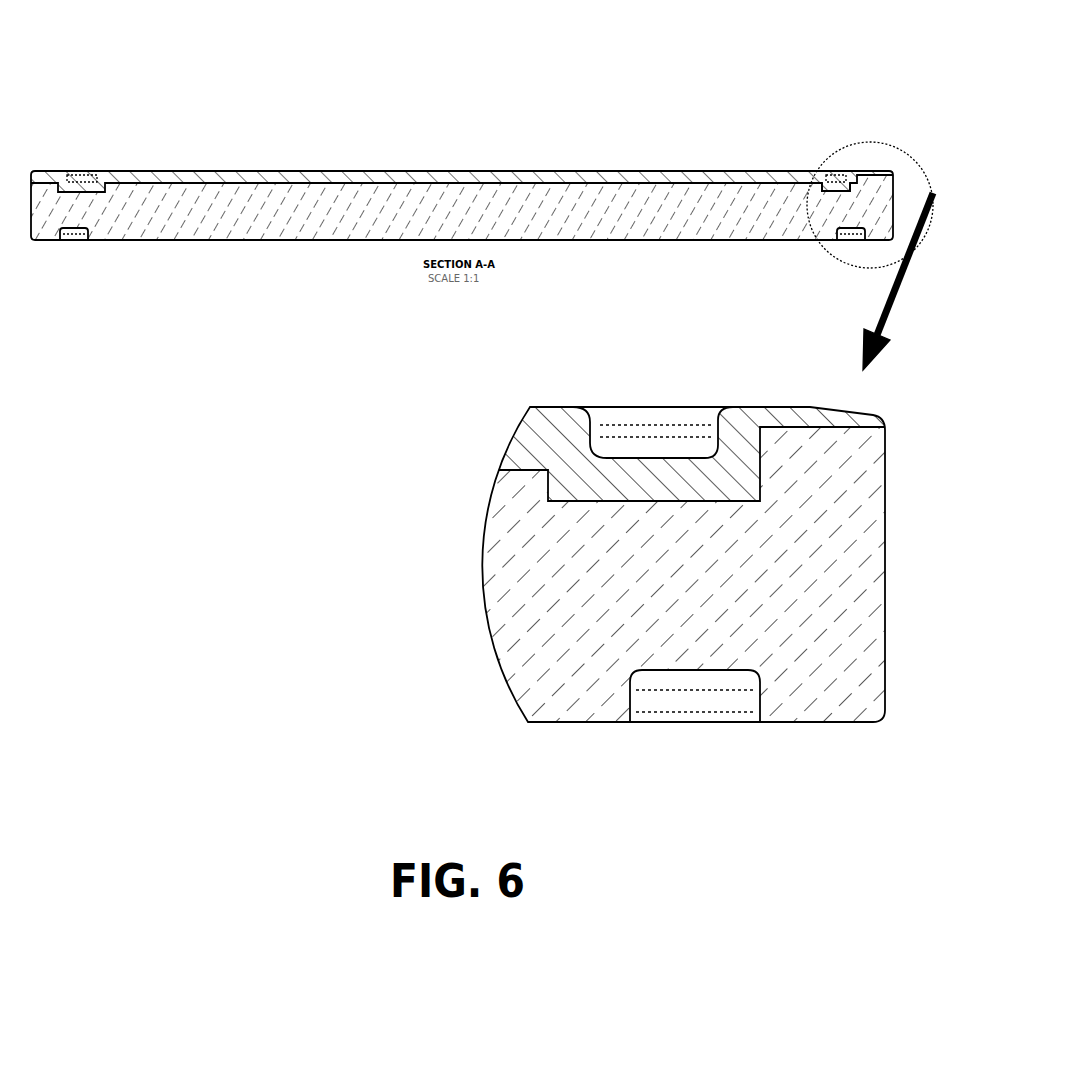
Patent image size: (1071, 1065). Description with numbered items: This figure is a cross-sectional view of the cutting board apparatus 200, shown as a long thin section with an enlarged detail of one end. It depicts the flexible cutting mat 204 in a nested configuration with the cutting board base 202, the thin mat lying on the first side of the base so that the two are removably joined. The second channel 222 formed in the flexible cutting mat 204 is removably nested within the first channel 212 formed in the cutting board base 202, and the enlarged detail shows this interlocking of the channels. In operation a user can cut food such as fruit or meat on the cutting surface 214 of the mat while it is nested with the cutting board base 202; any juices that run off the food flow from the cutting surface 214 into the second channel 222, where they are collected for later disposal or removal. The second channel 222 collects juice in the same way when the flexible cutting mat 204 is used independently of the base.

The cutting board apparatus 200 is at (308, 20).
The cutting board base 202 is at (445, 203).
The flexible cutting mat 204 is at (410, 180).
The cutting surface 214 is at (548, 172).
The first channel 212 is at (838, 188).
The second channel 222 is at (845, 176).